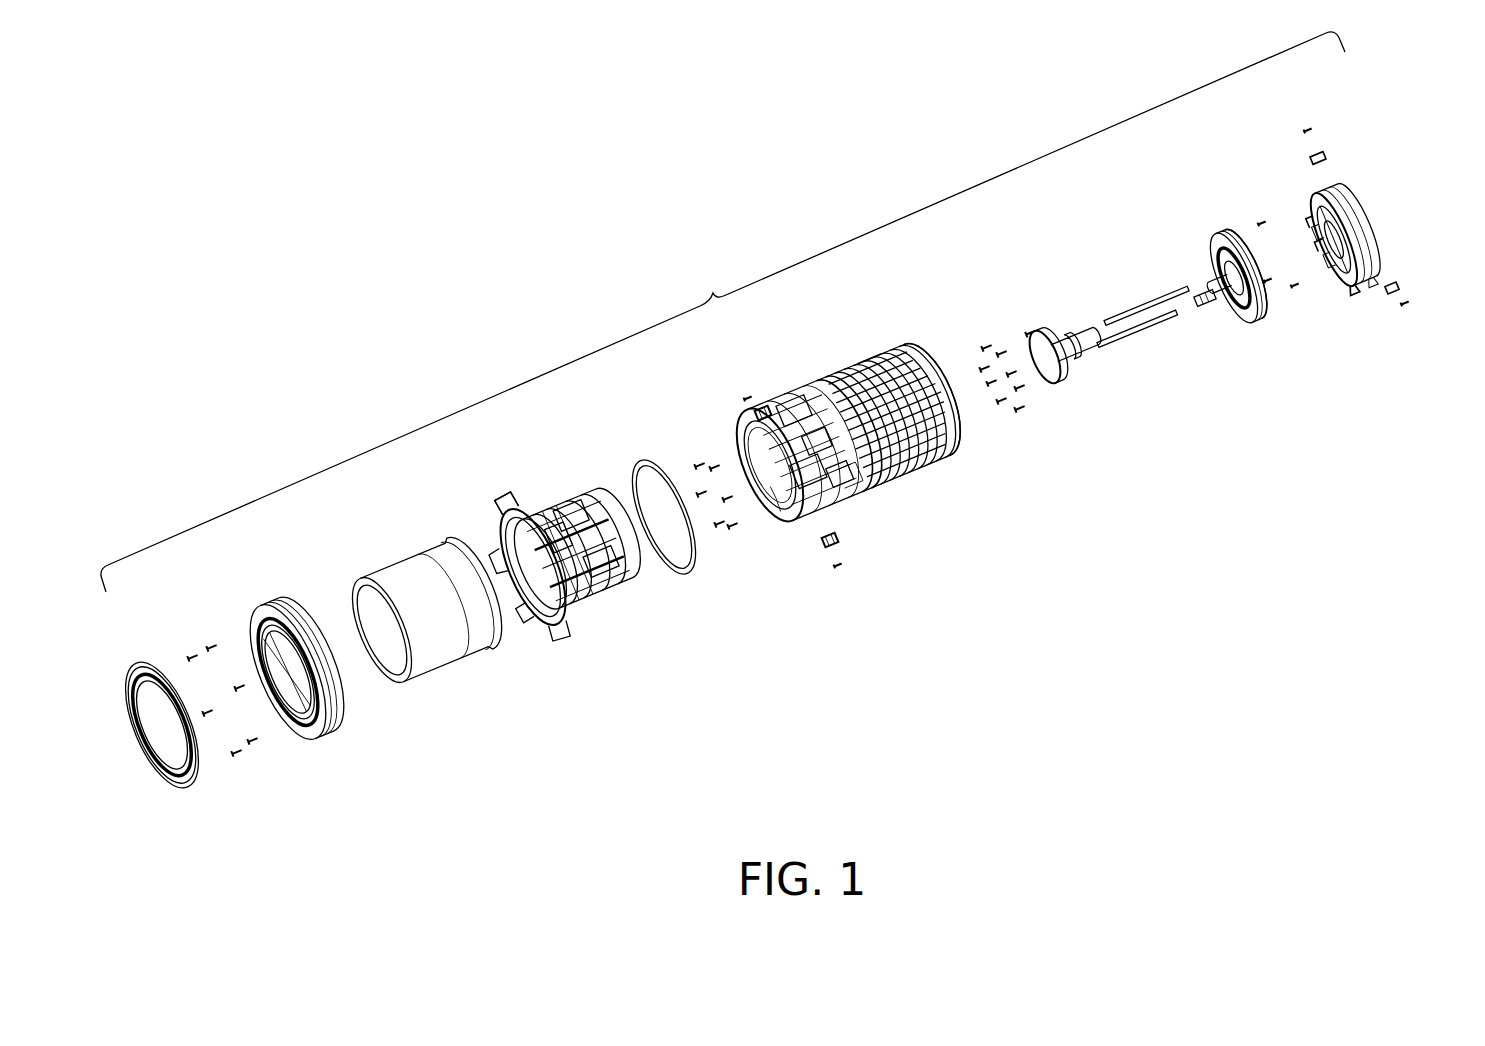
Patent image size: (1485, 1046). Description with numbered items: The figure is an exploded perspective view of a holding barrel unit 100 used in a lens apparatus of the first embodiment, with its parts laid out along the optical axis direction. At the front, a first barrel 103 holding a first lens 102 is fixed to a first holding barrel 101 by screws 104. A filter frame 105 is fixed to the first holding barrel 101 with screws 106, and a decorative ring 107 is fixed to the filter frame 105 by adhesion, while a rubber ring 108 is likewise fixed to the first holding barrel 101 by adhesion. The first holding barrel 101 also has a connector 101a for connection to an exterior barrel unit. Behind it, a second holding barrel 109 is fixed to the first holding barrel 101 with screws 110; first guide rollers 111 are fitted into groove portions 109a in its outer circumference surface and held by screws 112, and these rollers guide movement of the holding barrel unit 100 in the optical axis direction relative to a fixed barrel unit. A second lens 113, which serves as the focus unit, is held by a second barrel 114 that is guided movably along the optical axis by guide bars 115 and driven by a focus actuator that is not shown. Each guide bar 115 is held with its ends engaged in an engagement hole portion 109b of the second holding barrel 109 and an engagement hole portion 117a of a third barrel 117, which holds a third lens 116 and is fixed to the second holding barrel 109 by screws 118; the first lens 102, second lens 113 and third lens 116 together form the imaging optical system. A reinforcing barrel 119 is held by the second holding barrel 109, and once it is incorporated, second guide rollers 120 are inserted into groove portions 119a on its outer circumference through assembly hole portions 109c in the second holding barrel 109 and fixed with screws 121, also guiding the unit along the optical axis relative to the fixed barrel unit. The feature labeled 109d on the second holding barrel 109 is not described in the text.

The holding barrel unit 100 is at (723, 312).
The first holding barrel 101 is at (565, 500).
The connector 101a is at (530, 510).
The first lens 102 is at (350, 604).
The first barrel 103 is at (447, 557).
The screws 104 is at (680, 472).
The filter frame 105 is at (275, 600).
The screws 106 is at (175, 648).
The decorative ring 107 is at (138, 660).
The rubber ring 108 is at (636, 466).
The second holding barrel 109 is at (830, 393).
The groove portions 109a is at (860, 493).
The engagement hole portion 109b is at (761, 497).
The assembly hole portions 109c is at (935, 462).
The lens body grid band 109d is at (907, 367).
The screws 110 is at (960, 345).
The first guide rollers 111 is at (760, 408).
The screws 112 is at (744, 390).
The second lens 113 is at (1028, 328).
The second barrel 114 is at (1035, 327).
The guide bars 115 is at (1136, 318).
The third lens 116 is at (1205, 277).
The third barrel 117 is at (1212, 235).
The engagement hole portion 117a is at (1260, 300).
The screws 118 is at (1238, 234).
The reinforcing barrel 119 is at (1312, 202).
The groove portions 119a is at (1358, 280).
The second guide rollers 120 is at (1325, 148).
The screws 121 is at (1312, 127).